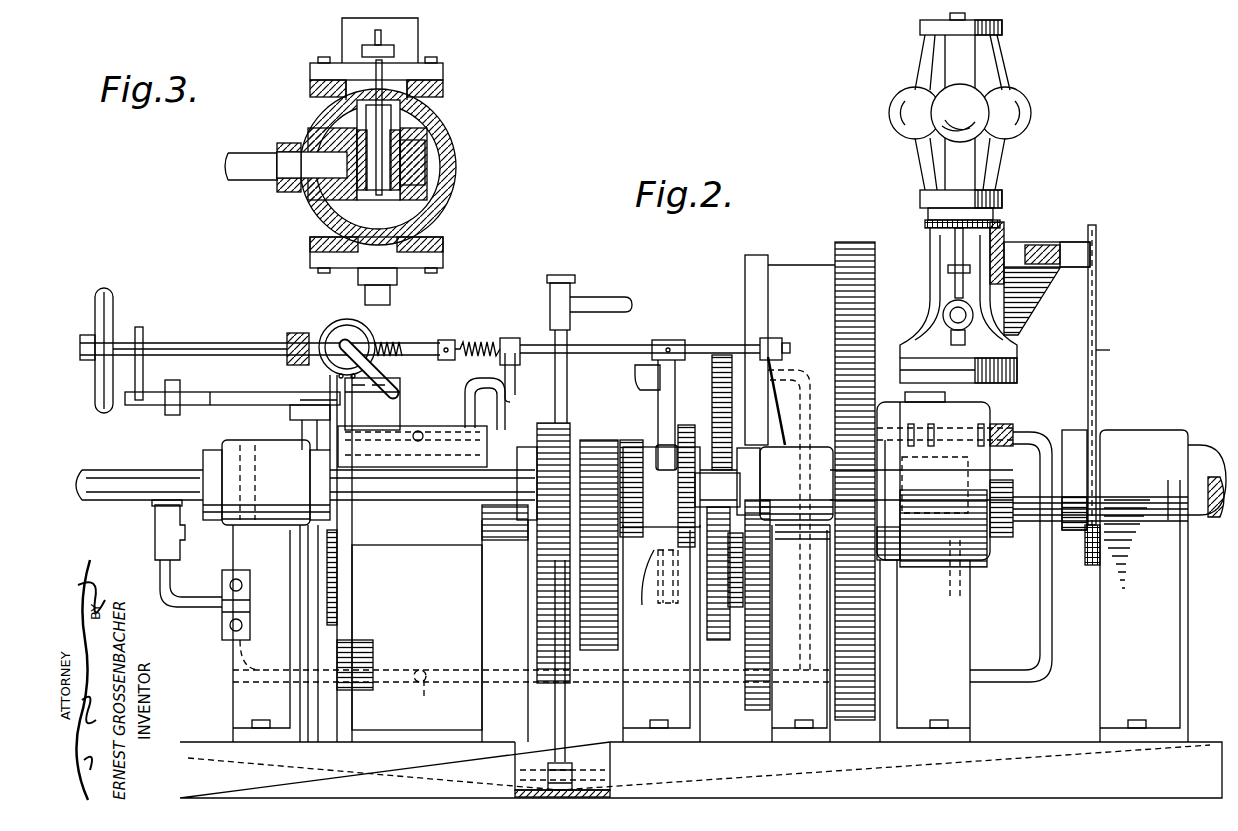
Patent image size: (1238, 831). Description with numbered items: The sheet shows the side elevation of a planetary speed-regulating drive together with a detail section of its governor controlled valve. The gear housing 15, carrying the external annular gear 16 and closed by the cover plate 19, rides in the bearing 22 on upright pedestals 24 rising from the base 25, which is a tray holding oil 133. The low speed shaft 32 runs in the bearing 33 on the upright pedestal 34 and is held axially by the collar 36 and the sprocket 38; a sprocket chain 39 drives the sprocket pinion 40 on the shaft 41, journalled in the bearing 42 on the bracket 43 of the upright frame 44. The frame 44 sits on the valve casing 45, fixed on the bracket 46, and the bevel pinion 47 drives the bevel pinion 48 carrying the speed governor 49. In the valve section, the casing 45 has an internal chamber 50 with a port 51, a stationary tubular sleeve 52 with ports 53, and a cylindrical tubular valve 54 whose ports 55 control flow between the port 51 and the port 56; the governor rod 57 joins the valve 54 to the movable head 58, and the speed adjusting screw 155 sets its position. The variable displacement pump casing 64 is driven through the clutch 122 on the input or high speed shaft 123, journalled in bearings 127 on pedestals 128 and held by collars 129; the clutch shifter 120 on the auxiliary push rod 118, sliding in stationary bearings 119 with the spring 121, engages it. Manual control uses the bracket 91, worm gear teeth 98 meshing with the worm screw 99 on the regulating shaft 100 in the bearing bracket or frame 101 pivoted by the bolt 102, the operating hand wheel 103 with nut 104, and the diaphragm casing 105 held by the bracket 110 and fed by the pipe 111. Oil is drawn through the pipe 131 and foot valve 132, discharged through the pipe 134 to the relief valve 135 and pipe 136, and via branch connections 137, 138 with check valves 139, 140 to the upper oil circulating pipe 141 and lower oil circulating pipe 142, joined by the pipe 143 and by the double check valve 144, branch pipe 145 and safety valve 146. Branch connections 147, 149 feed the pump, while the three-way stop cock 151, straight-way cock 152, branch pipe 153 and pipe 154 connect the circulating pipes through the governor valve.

In FIG. 2, the gear housing 15 is at (793, 264).
In FIG. 2, the external annular gear 16 is at (850, 242).
In FIG. 2, the cover plate 19 is at (755, 258).
In FIG. 2, the bearing 22 is at (930, 560).
In FIG. 2, the upright pedestals 24 is at (695, 700).
In FIG. 2, the base 25 is at (1033, 748).
In FIG. 2, the low speed shaft 32 is at (1208, 522).
In FIG. 2, the bearing 33 is at (1178, 440).
In FIG. 2, the upright pedestal 34 is at (1178, 632).
In FIG. 2, the collar 36 is at (1003, 535).
In FIG. 2, the sprocket 38 is at (1078, 540).
In FIG. 2, the sprocket chain 39 is at (1088, 345).
In FIG. 2, the sprocket pinion 40 is at (1080, 240).
In FIG. 2, the shaft 41 is at (1070, 268).
In FIG. 2, the bearing 42 is at (1035, 242).
In FIG. 2, the bracket 43 is at (1025, 300).
In FIG. 3, the upright frame 44 is at (420, 30).
In FIG. 2, the upright frame 44 is at (930, 288).
In FIG. 3, the valve casing 45 is at (442, 120).
In FIG. 2, the valve casing 45 is at (1010, 410).
In FIG. 3, the bracket 46 is at (444, 256).
In FIG. 2, the bracket 46 is at (923, 483).
In FIG. 2, the bevel pinion 47 is at (1005, 228).
In FIG. 2, the bevel pinion 48 is at (928, 214).
In FIG. 2, the speed governor 49 is at (1030, 128).
In FIG. 3, the internal chamber 50 is at (427, 166).
In FIG. 3, the port 51 is at (285, 146).
In FIG. 3, the stationary tubular sleeve 52 is at (370, 195).
In FIG. 3, the ports 53 is at (405, 150).
In FIG. 3, the cylindrical tubular valve 54 is at (384, 198).
In FIG. 3, the ports 55 is at (378, 150).
In FIG. 3, the port 56 is at (372, 268).
In FIG. 3, the governor rod 57 is at (373, 36).
In FIG. 2, the governor rod 57 is at (955, 260).
In FIG. 2, the movable head 58 is at (920, 30).
In FIG. 2, the cylindrical casing 64 is at (427, 631).
In FIG. 2, the bracket 91 is at (232, 405).
In FIG. 2, the worm gear teeth 98 is at (392, 340).
In FIG. 2, the worm screw 99 is at (295, 333).
In FIG. 2, the regulating shaft 100 is at (235, 334).
In FIG. 2, the bearing bracket or frame 101 is at (143, 340).
In FIG. 2, the bolt 102 is at (170, 415).
In FIG. 2, the operating hand wheel 103 is at (113, 318).
In FIG. 2, the nut 104 is at (88, 362).
In FIG. 2, the diaphragm casing 105 is at (340, 330).
In FIG. 2, the bracket 110 is at (400, 412).
In FIG. 2, the pipe 111 is at (395, 383).
In FIG. 2, the auxiliary push rod 118 is at (620, 340).
In FIG. 2, the stationary bearings 119 is at (785, 320).
In FIG. 2, the clutch shifter 120 is at (658, 395).
In FIG. 2, the spring 121 is at (478, 340).
In FIG. 2, the clutch 122 is at (658, 593).
In FIG. 2, the input or high speed shaft 123 is at (105, 500).
In FIG. 2, the bearings 127 is at (527, 489).
In FIG. 2, the pedestals 128 is at (232, 703).
In FIG. 2, the collars 129 is at (205, 460).
In FIG. 2, the pipe 131 is at (567, 700).
In FIG. 2, the foot valve 132 is at (575, 775).
In FIG. 2, the oil 133 is at (590, 752).
In FIG. 2, the pipe 134 is at (568, 418).
In FIG. 2, the relief valve 135 is at (572, 296).
In FIG. 2, the pipe 136 is at (618, 305).
In FIG. 2, the branch connection 137 is at (463, 400).
In FIG. 2, the branch connection 138 is at (798, 372).
In FIG. 2, the check valve 139 is at (530, 385).
In FIG. 2, the check valve 140 is at (660, 360).
In FIG. 2, the upper oil circulating pipe 141 is at (268, 425).
In FIG. 2, the lower oil circulating pipe 142 is at (418, 668).
In FIG. 2, the pipe 143 is at (1052, 612).
In FIG. 2, the double check valve 144 is at (222, 638).
In FIG. 2, the branch pipe 145 is at (172, 580).
In FIG. 2, the safety valve 146 is at (155, 530).
In FIG. 2, the branch connection 147 is at (412, 455).
In FIG. 2, the branch connection 149 is at (439, 692).
In FIG. 2, the three-way stop cock 151 is at (920, 405).
In FIG. 2, the straight-way cock 152 is at (960, 457).
In FIG. 3, the branch pipe 153 is at (250, 182).
In FIG. 2, the branch pipe 153 is at (945, 451).
In FIG. 3, the pipe 154 is at (385, 296).
In FIG. 2, the pipe 154 is at (948, 605).
In FIG. 2, the speed adjusting screw 155 is at (943, 315).